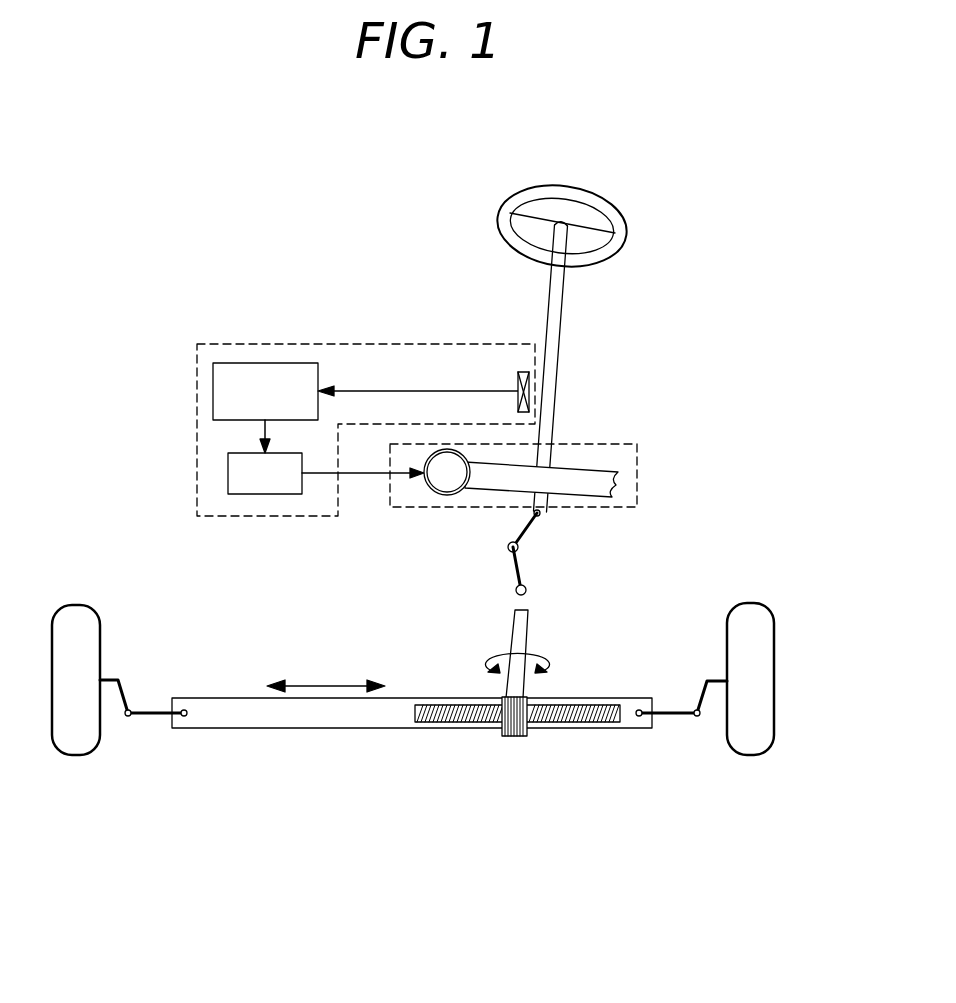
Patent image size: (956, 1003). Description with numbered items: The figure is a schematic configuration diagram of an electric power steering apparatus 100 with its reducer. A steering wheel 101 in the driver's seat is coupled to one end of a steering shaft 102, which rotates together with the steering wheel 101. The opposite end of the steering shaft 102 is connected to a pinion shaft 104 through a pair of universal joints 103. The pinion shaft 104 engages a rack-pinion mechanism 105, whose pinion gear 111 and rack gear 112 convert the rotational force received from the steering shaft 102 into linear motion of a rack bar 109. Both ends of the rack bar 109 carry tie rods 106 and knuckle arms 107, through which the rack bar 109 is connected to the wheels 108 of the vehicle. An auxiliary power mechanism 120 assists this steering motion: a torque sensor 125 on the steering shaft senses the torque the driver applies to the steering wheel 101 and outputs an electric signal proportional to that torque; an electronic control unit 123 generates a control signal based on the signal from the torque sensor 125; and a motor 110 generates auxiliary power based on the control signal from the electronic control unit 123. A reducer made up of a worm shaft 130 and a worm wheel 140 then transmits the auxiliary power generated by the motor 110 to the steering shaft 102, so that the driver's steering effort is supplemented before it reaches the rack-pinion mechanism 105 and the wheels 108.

The electric power steering apparatus 100 is at (317, 202).
The steering wheel 101 is at (497, 214).
The steering shaft 102 is at (560, 326).
The universal joints 103 is at (527, 531).
The pinion shaft 104 is at (512, 640).
The rack-pinion mechanism 105 is at (530, 798).
The tie rods 106 is at (677, 710).
The knuckle arms 107 is at (108, 678).
The wheels 108 is at (760, 612).
The rack bar 109 is at (284, 718).
The motor 110 is at (228, 480).
The pinion gear 111 is at (511, 738).
The rack gear 112 is at (556, 723).
The auxiliary power mechanism 120 is at (213, 333).
The electronic control unit 123 is at (303, 363).
The torque sensor 125 is at (518, 385).
The worm shaft 130 is at (443, 480).
The worm wheel 140 is at (552, 462).